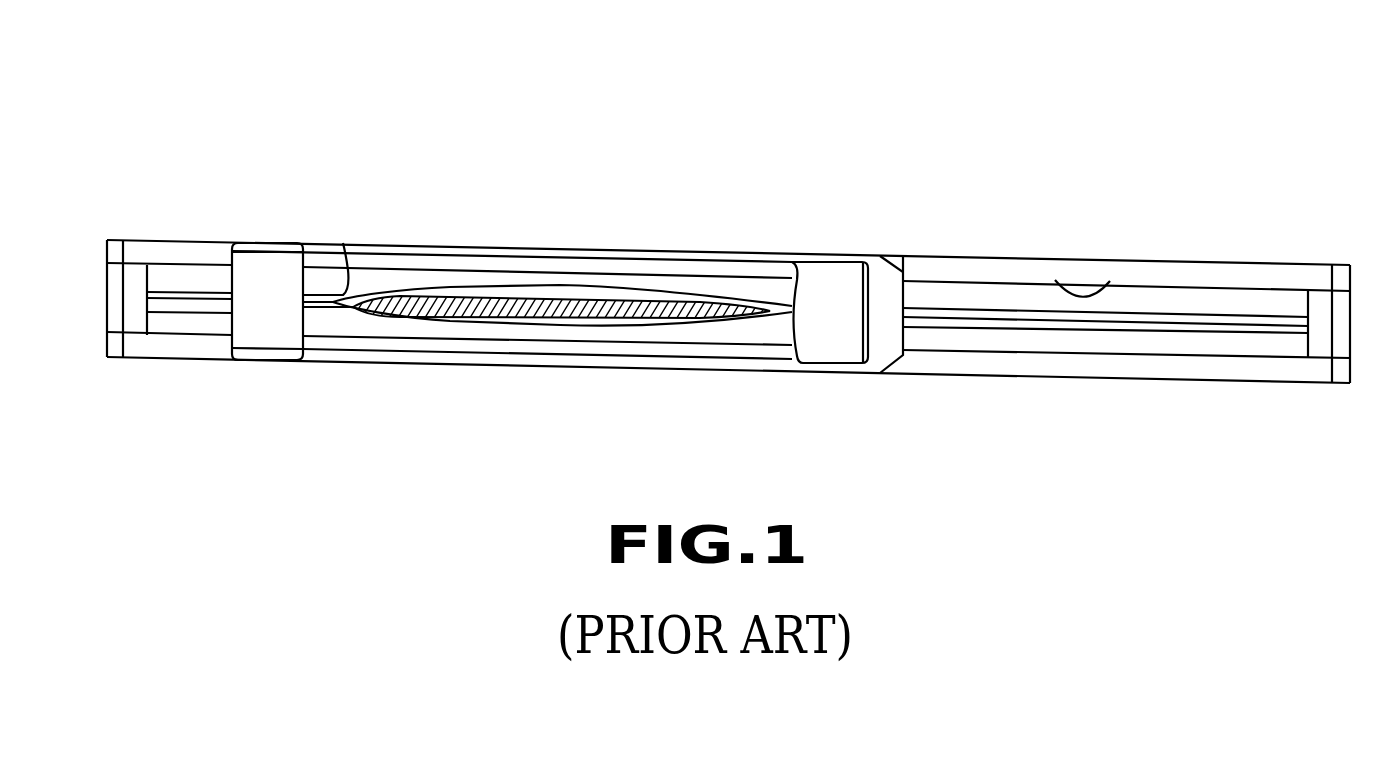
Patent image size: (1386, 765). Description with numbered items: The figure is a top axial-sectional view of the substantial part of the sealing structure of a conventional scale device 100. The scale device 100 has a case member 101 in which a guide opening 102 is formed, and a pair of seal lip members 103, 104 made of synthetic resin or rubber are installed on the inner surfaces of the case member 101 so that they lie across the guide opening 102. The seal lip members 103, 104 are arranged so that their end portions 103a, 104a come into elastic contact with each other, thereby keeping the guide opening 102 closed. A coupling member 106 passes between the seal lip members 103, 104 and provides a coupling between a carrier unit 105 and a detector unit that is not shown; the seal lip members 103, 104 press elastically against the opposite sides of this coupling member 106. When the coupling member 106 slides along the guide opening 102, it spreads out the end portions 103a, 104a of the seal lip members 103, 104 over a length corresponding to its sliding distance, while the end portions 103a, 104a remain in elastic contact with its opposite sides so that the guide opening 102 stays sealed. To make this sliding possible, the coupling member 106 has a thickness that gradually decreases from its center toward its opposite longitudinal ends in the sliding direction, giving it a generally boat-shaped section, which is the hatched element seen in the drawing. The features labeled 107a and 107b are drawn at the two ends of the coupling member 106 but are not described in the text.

The scale device 100 is at (797, 67).
The case member 101 is at (990, 256).
The guide opening 102 is at (1112, 285).
The seal lip member 103 is at (1226, 300).
The end portion 103a is at (696, 300).
The seal lip member 104 is at (1105, 340).
The end portion 104a is at (720, 324).
The carrier unit 105 is at (270, 326).
The coupling member 106 is at (503, 308).
The left support block 107a is at (348, 298).
The right support block 107b is at (758, 302).